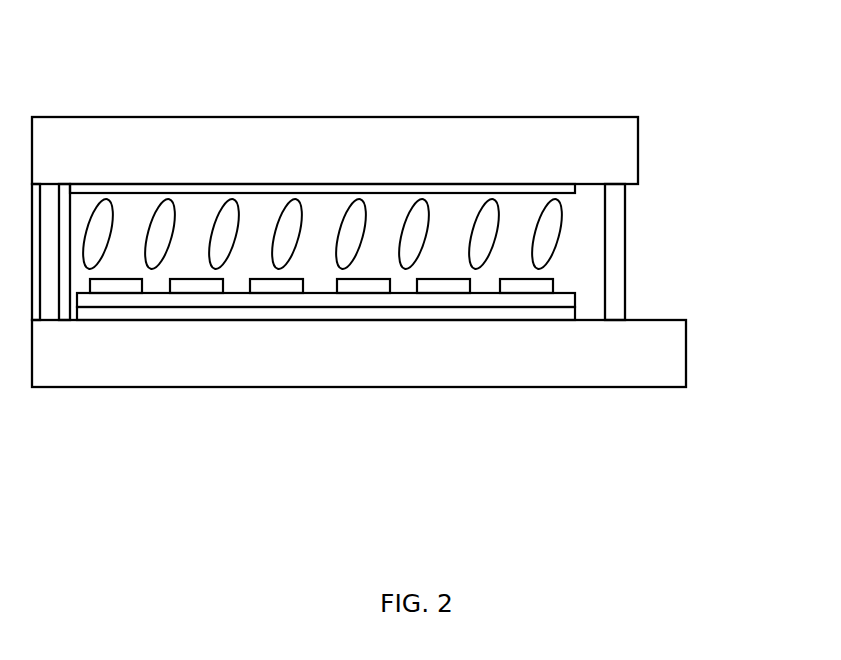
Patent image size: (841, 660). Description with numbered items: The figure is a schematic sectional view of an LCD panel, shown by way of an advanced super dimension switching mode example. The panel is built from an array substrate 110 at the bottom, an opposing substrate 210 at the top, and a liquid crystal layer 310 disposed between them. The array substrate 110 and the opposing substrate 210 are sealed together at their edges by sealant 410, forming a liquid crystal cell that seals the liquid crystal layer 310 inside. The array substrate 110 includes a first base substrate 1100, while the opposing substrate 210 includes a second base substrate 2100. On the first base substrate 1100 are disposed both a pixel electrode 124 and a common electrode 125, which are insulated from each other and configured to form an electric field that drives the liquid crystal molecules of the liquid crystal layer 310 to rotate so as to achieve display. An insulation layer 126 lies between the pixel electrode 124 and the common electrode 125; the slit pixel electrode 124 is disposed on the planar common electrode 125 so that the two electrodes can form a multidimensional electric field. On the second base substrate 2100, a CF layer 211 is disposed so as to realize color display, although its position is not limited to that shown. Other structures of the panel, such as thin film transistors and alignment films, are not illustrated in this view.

The opposing substrate 210 is at (352, 106).
The second base substrate 2100 is at (458, 137).
The CF layer 211 is at (482, 190).
The sealant 410 is at (615, 208).
The liquid crystal layer 310 is at (575, 235).
The array substrate 110 is at (359, 412).
The first base substrate 1100 is at (522, 367).
The common electrode 125 is at (295, 313).
The insulation layer 126 is at (353, 298).
The pixel electrode 124 is at (321, 370).